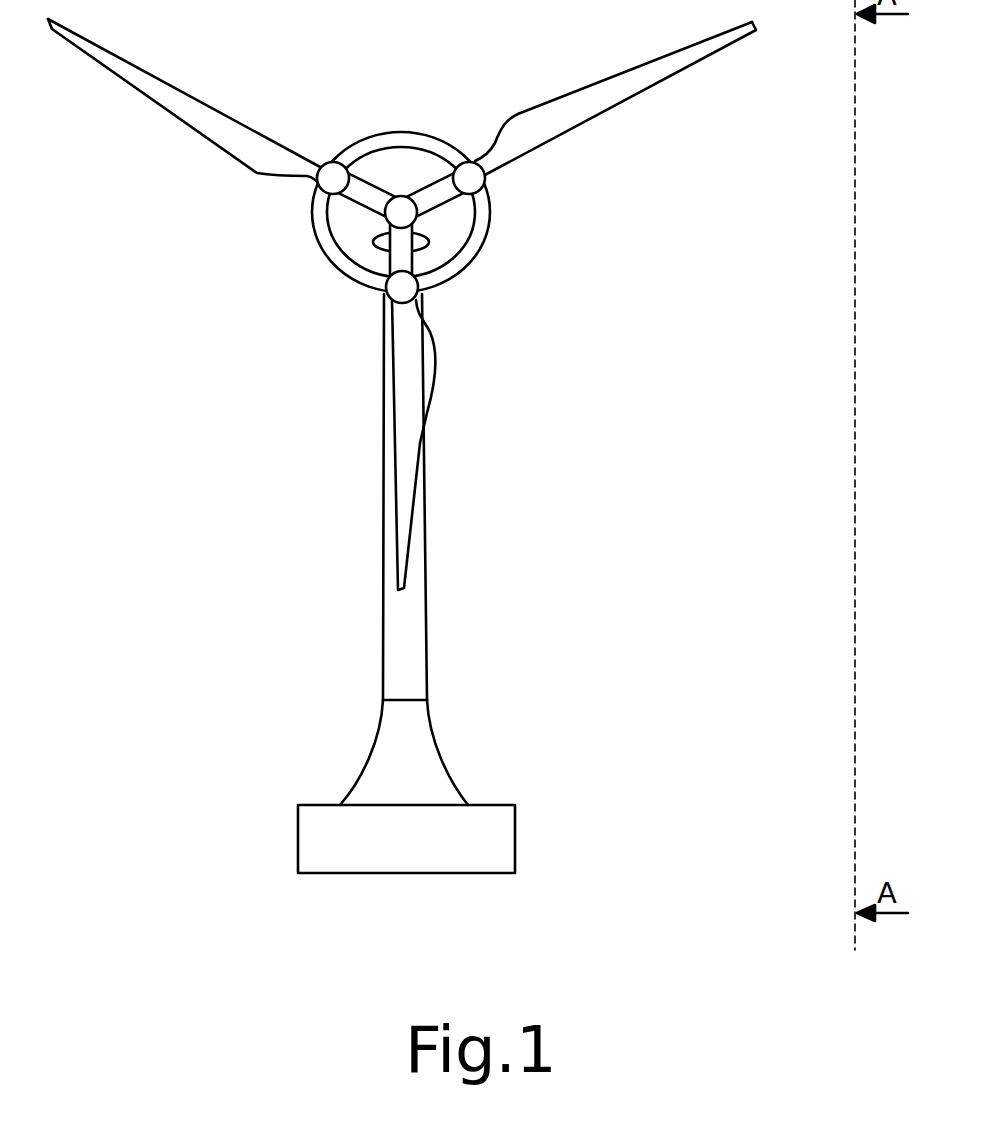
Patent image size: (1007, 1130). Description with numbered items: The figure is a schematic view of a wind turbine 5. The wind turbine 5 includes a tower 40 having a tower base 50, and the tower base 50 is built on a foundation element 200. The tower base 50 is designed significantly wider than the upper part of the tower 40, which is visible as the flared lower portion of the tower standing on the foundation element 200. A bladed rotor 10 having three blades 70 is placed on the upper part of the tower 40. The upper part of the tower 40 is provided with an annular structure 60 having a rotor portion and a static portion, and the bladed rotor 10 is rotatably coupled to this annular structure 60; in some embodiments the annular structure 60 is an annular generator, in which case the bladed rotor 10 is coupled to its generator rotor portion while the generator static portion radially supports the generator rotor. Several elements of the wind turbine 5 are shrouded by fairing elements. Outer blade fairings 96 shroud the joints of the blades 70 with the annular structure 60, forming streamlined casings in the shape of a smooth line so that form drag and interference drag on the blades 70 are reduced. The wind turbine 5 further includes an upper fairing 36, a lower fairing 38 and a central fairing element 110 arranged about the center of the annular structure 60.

The wind turbine 5 is at (152, 519).
The bladed rotor 10 is at (626, 286).
The upper fairing 36 is at (400, 202).
The lower fairing 38 is at (430, 243).
The tower 40 is at (497, 608).
The tower base 50 is at (443, 767).
The annular structure 60 is at (448, 295).
The blades 70 is at (190, 112).
The outer blade fairings 96 is at (332, 181).
The central fairing element 110 is at (399, 216).
The foundation element 200 is at (487, 848).